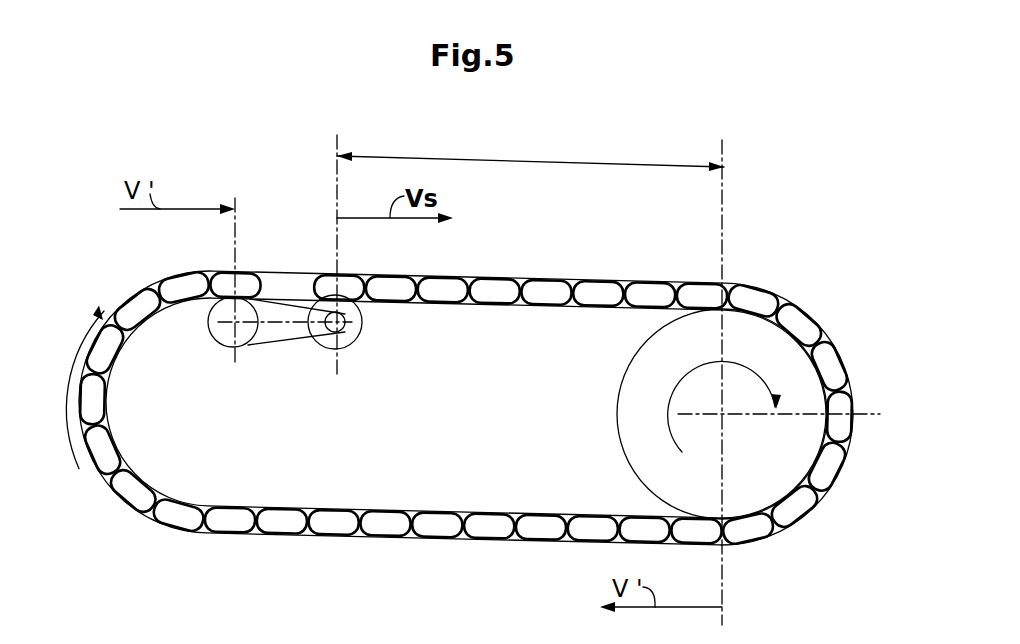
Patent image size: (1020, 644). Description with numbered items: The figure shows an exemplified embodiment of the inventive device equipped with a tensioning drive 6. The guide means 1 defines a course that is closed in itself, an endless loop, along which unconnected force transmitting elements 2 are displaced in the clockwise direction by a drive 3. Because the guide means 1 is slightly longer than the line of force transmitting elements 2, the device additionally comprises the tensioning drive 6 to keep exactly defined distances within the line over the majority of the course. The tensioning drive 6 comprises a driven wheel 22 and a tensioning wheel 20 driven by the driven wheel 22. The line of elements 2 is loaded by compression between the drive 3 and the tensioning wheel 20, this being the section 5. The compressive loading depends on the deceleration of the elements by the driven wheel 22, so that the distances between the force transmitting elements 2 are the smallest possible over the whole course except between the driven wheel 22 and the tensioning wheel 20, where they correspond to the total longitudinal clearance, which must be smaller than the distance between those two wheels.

The guide means 1 is at (470, 277).
The force transmitting elements 2 is at (555, 286).
The drive 3 is at (757, 471).
The section 5 is at (508, 162).
The tensioning drive 6 is at (290, 260).
The tensioning wheel 20 is at (348, 338).
The driven wheel 22 is at (242, 336).